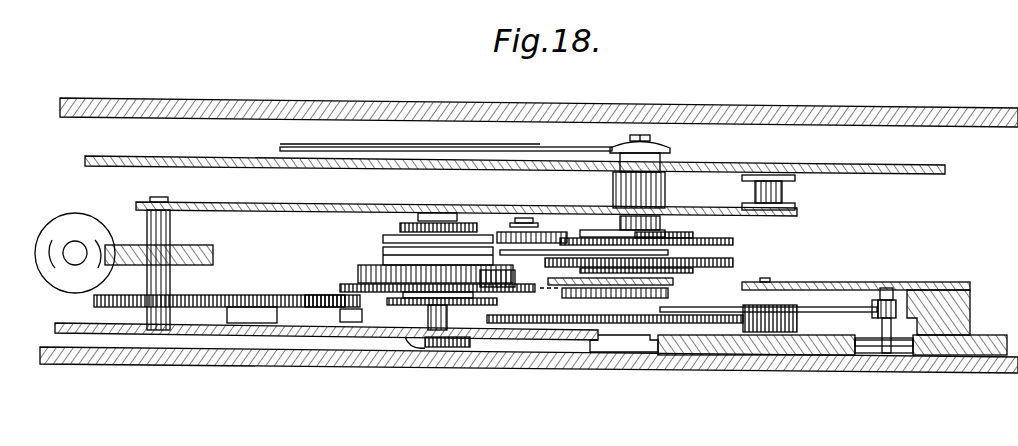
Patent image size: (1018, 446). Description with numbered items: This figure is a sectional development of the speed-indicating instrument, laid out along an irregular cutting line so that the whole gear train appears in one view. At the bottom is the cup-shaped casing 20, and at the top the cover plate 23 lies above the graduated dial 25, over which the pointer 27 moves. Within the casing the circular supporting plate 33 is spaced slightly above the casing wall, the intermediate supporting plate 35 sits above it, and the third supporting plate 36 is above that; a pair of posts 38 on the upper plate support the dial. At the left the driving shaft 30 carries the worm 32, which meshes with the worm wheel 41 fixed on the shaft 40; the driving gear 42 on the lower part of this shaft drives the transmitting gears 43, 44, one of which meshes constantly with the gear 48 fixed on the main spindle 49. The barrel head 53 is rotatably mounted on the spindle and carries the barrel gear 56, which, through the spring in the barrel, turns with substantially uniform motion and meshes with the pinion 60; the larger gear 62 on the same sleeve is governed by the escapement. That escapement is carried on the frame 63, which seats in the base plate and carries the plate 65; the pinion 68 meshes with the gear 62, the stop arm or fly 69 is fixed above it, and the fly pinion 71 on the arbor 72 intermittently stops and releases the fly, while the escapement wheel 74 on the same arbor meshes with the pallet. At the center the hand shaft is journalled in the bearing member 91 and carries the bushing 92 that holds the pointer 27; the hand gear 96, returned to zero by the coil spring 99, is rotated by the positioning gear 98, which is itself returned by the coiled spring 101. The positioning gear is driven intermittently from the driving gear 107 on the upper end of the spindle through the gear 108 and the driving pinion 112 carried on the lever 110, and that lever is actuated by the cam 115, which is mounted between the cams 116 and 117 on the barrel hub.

The casing 20 is at (385, 372).
The cover plate 23 is at (800, 126).
The graduated dial 25 is at (866, 166).
The pointer 27 is at (470, 150).
The driving shaft 30 is at (70, 247).
The worm 32 is at (50, 274).
The circular supporting plate 33 is at (532, 338).
The intermediate supporting plate 35 is at (550, 282).
The third supporting plate 36 is at (298, 202).
The posts 38 is at (784, 192).
The shaft 40 is at (170, 232).
The worm wheel 41 is at (212, 251).
The driving gear 42 is at (192, 296).
The transmitting gear 43 is at (248, 296).
The transmitting gear 44 is at (306, 297).
The gear 48 is at (440, 314).
The main shaft or spindle 49 is at (448, 318).
The barrel head 53 is at (360, 272).
The gear 56 is at (522, 299).
The pinion 60 is at (670, 292).
The gear 62 is at (615, 311).
The escapement frame 63 is at (836, 357).
The plate 65 is at (828, 283).
The pinion 68 is at (784, 320).
The stop arm or fly 69 is at (769, 317).
The fly pinion 71 is at (905, 300).
The arbor 72 is at (888, 288).
The escapement wheel 74 is at (913, 355).
The bearing member 91 is at (666, 193).
The bushing 92 is at (672, 150).
The hand gear 96 is at (734, 263).
The positioning gear 98 is at (734, 242).
The coil spring 99 is at (694, 271).
The coiled spring 101 is at (694, 235).
The driving gear 107 is at (408, 220).
The gear 108 is at (492, 230).
The lever 110 is at (500, 278).
The driving pinion 112 is at (543, 231).
The cam 115 is at (383, 240).
The cam 116 is at (398, 228).
The cam 117 is at (383, 260).